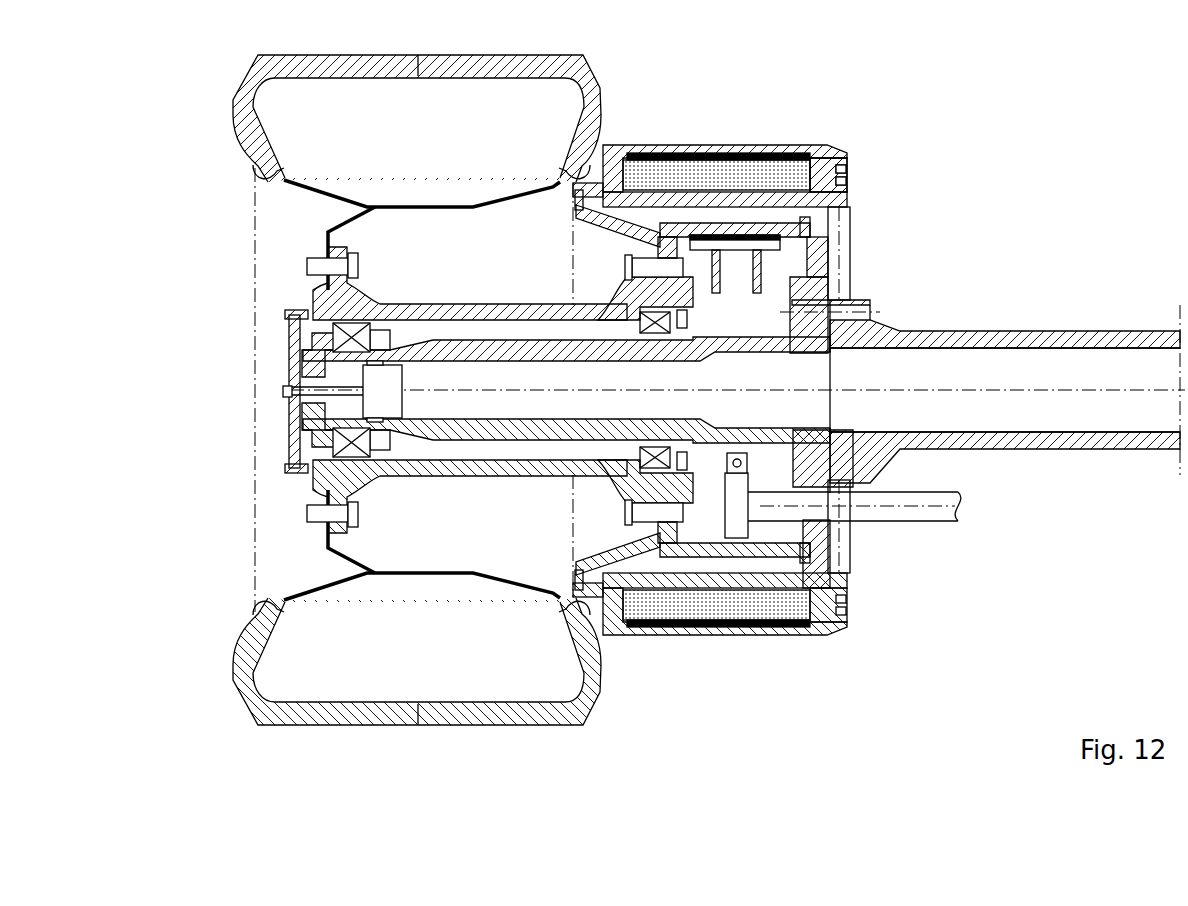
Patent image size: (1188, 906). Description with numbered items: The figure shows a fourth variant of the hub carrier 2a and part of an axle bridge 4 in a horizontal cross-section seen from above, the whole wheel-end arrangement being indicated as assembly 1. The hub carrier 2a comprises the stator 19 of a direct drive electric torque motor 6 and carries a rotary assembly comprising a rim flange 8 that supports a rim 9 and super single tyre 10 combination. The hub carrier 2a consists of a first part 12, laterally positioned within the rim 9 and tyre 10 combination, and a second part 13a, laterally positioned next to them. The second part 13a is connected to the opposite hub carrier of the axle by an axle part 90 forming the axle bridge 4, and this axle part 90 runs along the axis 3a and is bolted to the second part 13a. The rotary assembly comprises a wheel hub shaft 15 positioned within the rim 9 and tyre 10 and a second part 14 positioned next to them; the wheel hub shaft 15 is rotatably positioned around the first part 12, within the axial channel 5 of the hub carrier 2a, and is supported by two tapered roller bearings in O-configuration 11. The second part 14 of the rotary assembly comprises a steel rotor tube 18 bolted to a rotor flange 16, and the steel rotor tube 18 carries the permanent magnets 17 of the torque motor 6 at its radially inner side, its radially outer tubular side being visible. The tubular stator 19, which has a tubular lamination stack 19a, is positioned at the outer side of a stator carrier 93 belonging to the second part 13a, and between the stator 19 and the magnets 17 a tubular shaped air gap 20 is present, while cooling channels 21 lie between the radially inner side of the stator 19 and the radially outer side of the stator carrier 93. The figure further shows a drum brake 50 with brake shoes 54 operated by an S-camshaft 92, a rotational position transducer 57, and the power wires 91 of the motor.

The wheel drive assembly 1 is at (948, 176).
The hub carrier 2a is at (637, 430).
The axis 3a is at (1025, 388).
The axle bridge 4 is at (1090, 450).
The axial channel 5 is at (415, 432).
The direct drive electric torque motor 6 is at (768, 660).
The rim flange 8 is at (330, 262).
The rim 9 is at (280, 548).
The super single tyre 10 is at (258, 645).
The tapered roller bearings in O-configuration 11 is at (350, 442).
The first part 12 is at (437, 349).
The second part 13a is at (815, 482).
The second part 14 is at (615, 232).
The wheel hub shaft 15 is at (415, 503).
The rotor flange 16 is at (583, 583).
The permanent magnets 17 is at (705, 153).
The steel rotor tube 18 is at (800, 637).
The stator 19 is at (795, 172).
The tubular lamination stack 19a is at (828, 175).
The air gap 20 is at (665, 160).
The cooling channels 21 is at (785, 190).
The drum brake 50 is at (733, 533).
The brake shoes 54 is at (748, 238).
The rotational position transducer 57 is at (296, 391).
The axle part 90 is at (988, 333).
The power wires 91 is at (872, 292).
The S-camshaft 92 is at (960, 512).
The stator carrier 93 is at (830, 574).